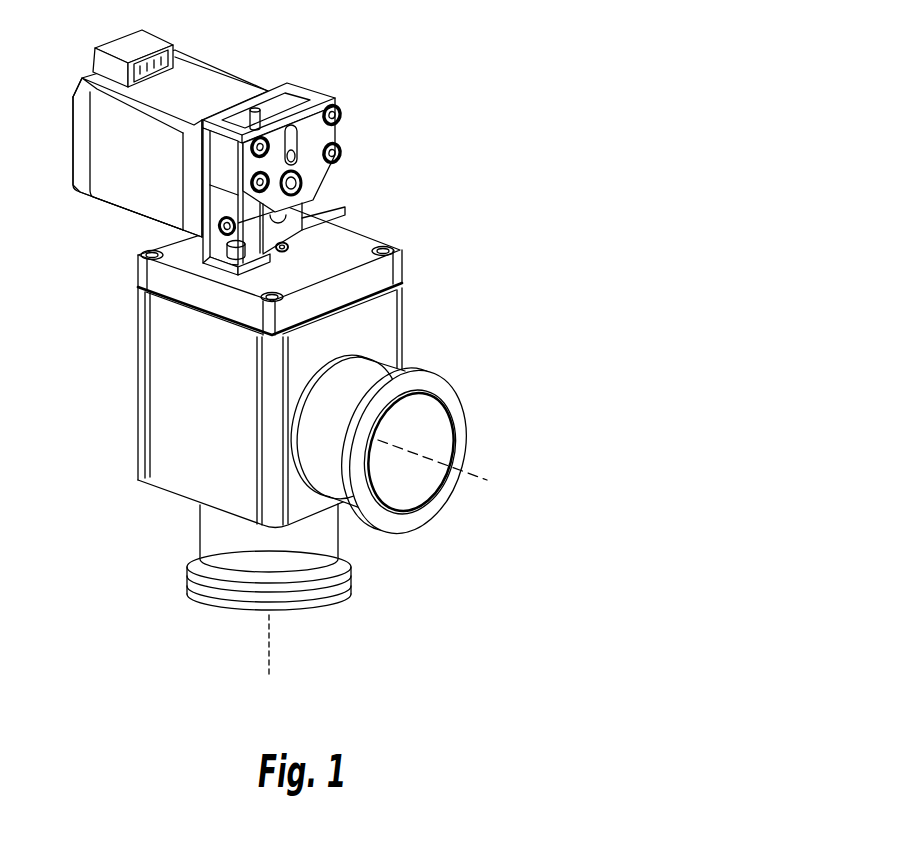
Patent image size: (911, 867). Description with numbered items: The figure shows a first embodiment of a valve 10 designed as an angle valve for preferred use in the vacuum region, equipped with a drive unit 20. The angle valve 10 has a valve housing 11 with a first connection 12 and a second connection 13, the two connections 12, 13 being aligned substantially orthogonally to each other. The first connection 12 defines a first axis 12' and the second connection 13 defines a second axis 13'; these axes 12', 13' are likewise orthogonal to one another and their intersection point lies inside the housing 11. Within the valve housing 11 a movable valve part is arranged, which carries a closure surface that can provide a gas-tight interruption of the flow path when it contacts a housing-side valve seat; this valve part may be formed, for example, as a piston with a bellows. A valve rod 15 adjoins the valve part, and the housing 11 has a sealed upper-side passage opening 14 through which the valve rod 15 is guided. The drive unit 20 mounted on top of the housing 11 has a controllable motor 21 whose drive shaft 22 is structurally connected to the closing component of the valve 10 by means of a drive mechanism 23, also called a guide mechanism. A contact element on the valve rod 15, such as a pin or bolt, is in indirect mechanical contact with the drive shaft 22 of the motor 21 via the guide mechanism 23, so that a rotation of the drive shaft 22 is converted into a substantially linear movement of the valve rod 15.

The valve 10 is at (302, 348).
The valve housing 11 is at (388, 338).
The first connection 12 is at (295, 583).
The first axis 12' is at (217, 645).
The second connection 13 is at (417, 445).
The second axis 13' is at (471, 490).
The passage opening 14 is at (272, 265).
The valve rod 15 is at (273, 262).
The drive unit 20 is at (248, 191).
The motor 21 is at (128, 180).
The drive shaft 22 is at (300, 181).
The drive mechanism 23 is at (348, 120).